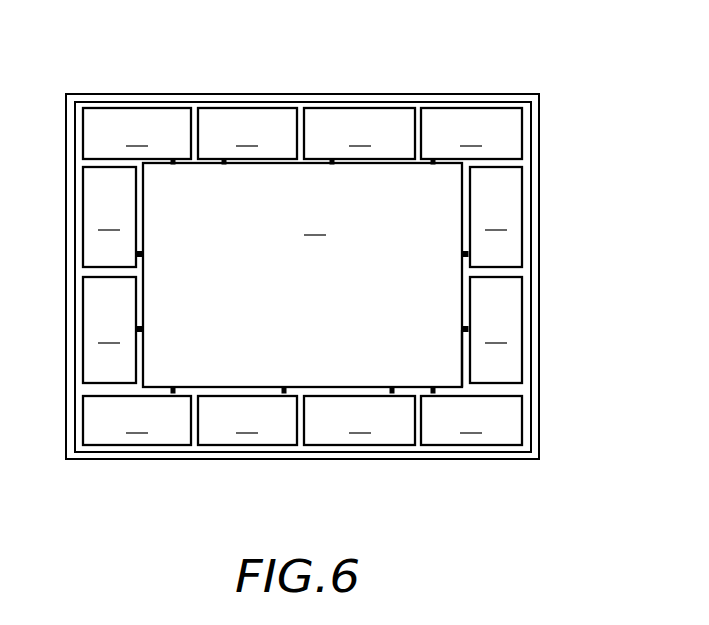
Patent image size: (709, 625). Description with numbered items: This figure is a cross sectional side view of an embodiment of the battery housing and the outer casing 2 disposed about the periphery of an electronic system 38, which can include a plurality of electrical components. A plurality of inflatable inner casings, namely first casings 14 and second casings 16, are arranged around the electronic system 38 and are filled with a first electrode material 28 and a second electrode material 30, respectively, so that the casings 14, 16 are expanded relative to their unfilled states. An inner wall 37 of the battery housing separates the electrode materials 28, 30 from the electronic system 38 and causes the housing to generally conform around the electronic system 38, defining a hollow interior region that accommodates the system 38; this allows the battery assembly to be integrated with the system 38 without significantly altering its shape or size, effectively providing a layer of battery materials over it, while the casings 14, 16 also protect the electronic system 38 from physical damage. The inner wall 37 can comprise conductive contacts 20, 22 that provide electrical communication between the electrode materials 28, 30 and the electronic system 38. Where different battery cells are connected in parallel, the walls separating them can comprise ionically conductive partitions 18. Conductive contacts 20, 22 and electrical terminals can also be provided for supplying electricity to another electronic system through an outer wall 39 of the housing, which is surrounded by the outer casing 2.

The outer casing 2 is at (535, 107).
The first casing 14 is at (167, 107).
The second casing 16 is at (268, 107).
The ionically conductive partition 18 is at (500, 277).
The first electrical contact 20 is at (138, 328).
The second electrical contact 22 is at (138, 253).
The first electrode material 28 is at (309, 285).
The second electrode material 30 is at (295, 285).
The inner wall 37 is at (463, 363).
The electronic system 38 is at (302, 275).
The outer wall 39 is at (541, 167).